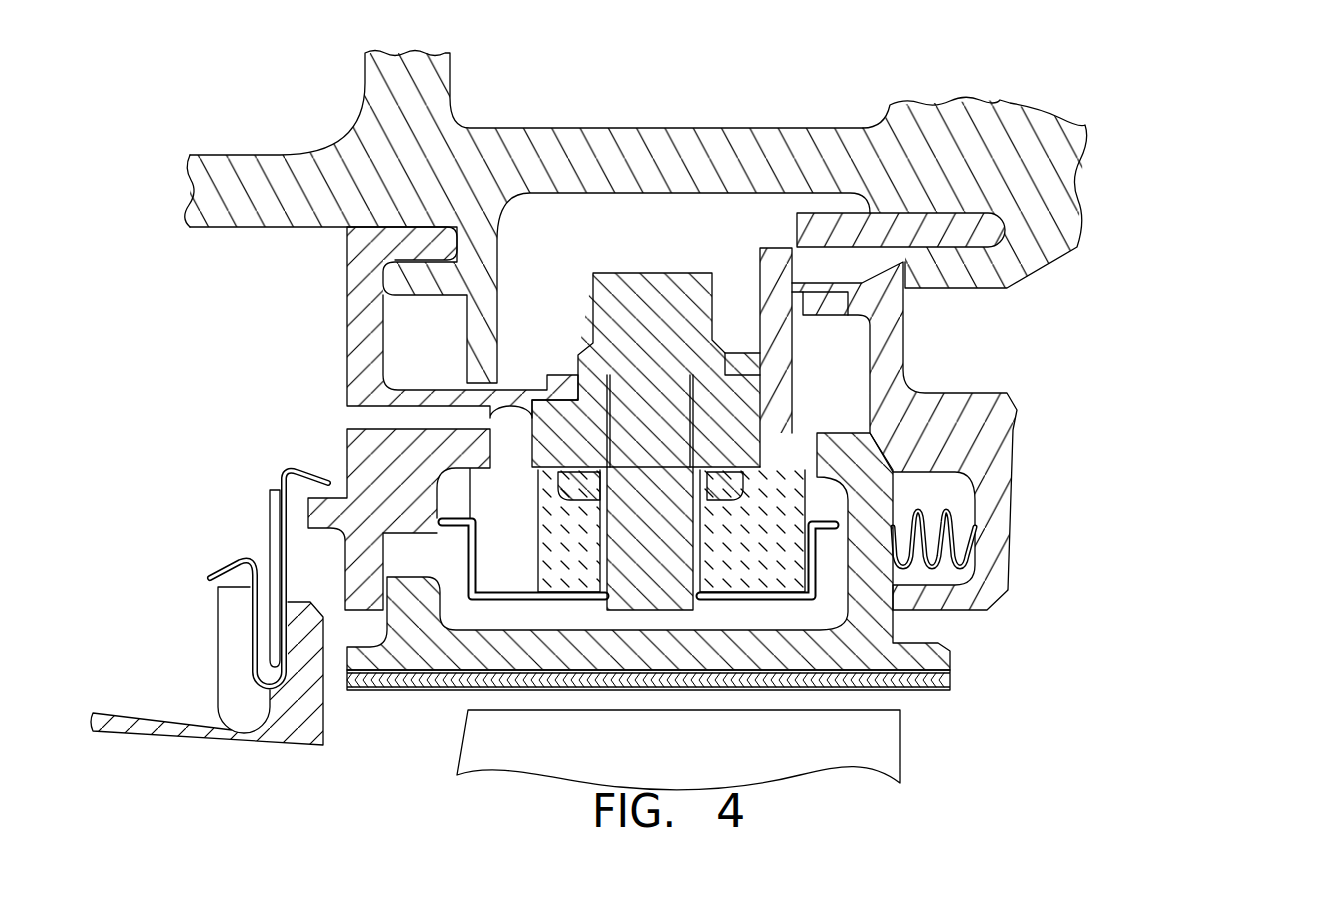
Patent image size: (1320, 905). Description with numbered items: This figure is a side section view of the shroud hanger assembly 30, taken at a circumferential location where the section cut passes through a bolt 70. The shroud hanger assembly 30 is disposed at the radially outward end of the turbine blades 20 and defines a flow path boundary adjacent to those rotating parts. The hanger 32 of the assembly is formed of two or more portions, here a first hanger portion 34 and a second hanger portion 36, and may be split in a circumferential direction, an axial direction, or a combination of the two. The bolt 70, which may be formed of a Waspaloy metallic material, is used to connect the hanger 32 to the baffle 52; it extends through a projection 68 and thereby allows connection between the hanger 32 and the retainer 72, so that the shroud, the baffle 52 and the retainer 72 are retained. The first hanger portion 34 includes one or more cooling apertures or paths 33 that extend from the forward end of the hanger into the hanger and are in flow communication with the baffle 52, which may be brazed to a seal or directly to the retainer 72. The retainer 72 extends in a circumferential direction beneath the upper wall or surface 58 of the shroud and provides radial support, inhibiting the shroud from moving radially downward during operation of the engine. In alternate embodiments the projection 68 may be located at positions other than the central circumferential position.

The turbine blades 20 is at (880, 754).
The shroud hanger assembly 30 is at (1130, 238).
The hanger 32 is at (572, 222).
The cooling apertures or paths 33 is at (372, 418).
The first hanger portion 34 is at (408, 466).
The second hanger portion 36 is at (888, 313).
The baffle 52 is at (769, 582).
The upper wall or surface 58 is at (813, 436).
The projection 68 is at (713, 322).
The bolt 70 is at (650, 563).
The retainer 72 is at (790, 499).